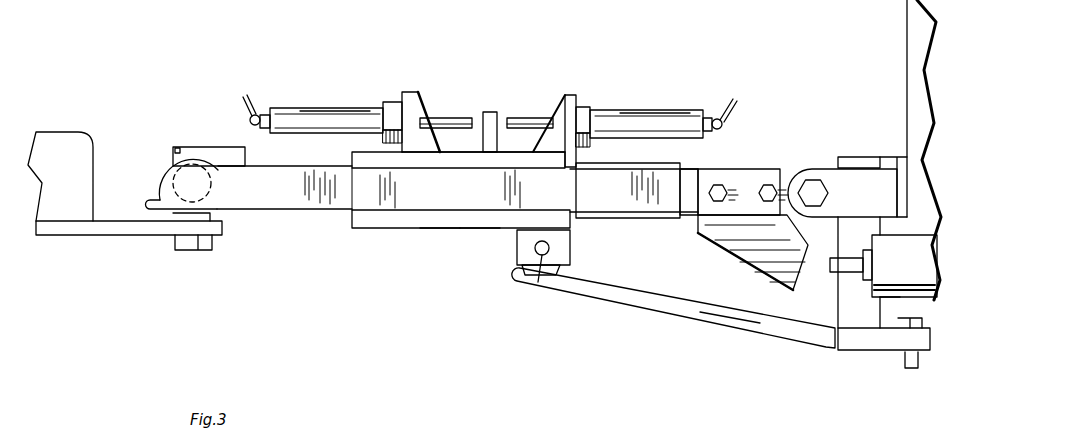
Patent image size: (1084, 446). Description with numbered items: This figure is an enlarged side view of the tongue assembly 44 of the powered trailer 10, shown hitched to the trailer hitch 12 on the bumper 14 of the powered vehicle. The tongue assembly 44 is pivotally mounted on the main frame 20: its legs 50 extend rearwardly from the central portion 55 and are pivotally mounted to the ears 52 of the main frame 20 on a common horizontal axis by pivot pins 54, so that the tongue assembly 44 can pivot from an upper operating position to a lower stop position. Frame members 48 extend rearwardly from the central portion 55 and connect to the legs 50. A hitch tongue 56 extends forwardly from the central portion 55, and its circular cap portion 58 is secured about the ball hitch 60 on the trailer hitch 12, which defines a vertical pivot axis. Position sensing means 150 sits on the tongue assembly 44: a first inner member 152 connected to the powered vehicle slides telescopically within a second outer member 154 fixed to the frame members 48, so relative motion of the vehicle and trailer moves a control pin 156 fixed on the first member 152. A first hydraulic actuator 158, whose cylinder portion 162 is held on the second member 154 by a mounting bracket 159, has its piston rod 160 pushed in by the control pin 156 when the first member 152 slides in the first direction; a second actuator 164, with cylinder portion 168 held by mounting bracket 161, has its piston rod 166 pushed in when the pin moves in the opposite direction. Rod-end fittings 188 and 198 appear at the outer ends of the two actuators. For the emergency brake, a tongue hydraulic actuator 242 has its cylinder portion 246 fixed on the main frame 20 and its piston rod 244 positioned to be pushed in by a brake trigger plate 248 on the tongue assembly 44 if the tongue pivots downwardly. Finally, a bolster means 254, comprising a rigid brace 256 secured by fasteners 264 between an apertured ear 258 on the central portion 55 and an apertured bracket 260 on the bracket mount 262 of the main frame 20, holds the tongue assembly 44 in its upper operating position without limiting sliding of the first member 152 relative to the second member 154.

The powered trailer 10 is at (898, 77).
The trailer hitch 12 is at (93, 236).
The bumper 14 is at (77, 130).
The main frame 20 is at (905, 160).
The tongue assembly 44 is at (430, 243).
The frame members 48 is at (595, 206).
The legs 50 is at (793, 166).
The ears 52 is at (877, 196).
The pivot pins 54 is at (814, 178).
The central portion 55 is at (468, 234).
The hitch tongue 56 is at (248, 198).
The circular cap portion 58 is at (158, 183).
The ball hitch 60 is at (170, 163).
The position sensing means 150 is at (531, 50).
The first inner member 152 is at (318, 213).
The second outer member 154 is at (389, 218).
The control pin 156 is at (497, 112).
The first hydraulic actuator 158 is at (367, 104).
The mounting bracket 159 is at (404, 93).
The piston rod 160 is at (442, 117).
The mounting bracket 161 is at (570, 95).
The cylinder portion 162 is at (306, 108).
The second actuator 164 is at (634, 108).
The piston rod 166 is at (529, 118).
The cylinder portion 168 is at (684, 112).
The rod end clevis 188 is at (253, 104).
The rod end clevis 198 is at (728, 116).
The tongue hydraulic actuator 242 is at (896, 300).
The piston rod 244 is at (846, 273).
The cylinder portion 246 is at (904, 266).
The brake trigger plate 248 is at (769, 256).
The bolster means 254 is at (668, 324).
The rigid brace 256 is at (742, 326).
The apertured ear 258 is at (570, 258).
The apertured bracket 260 is at (891, 333).
The bracket mount 262 is at (850, 309).
The fasteners 264 is at (533, 278).